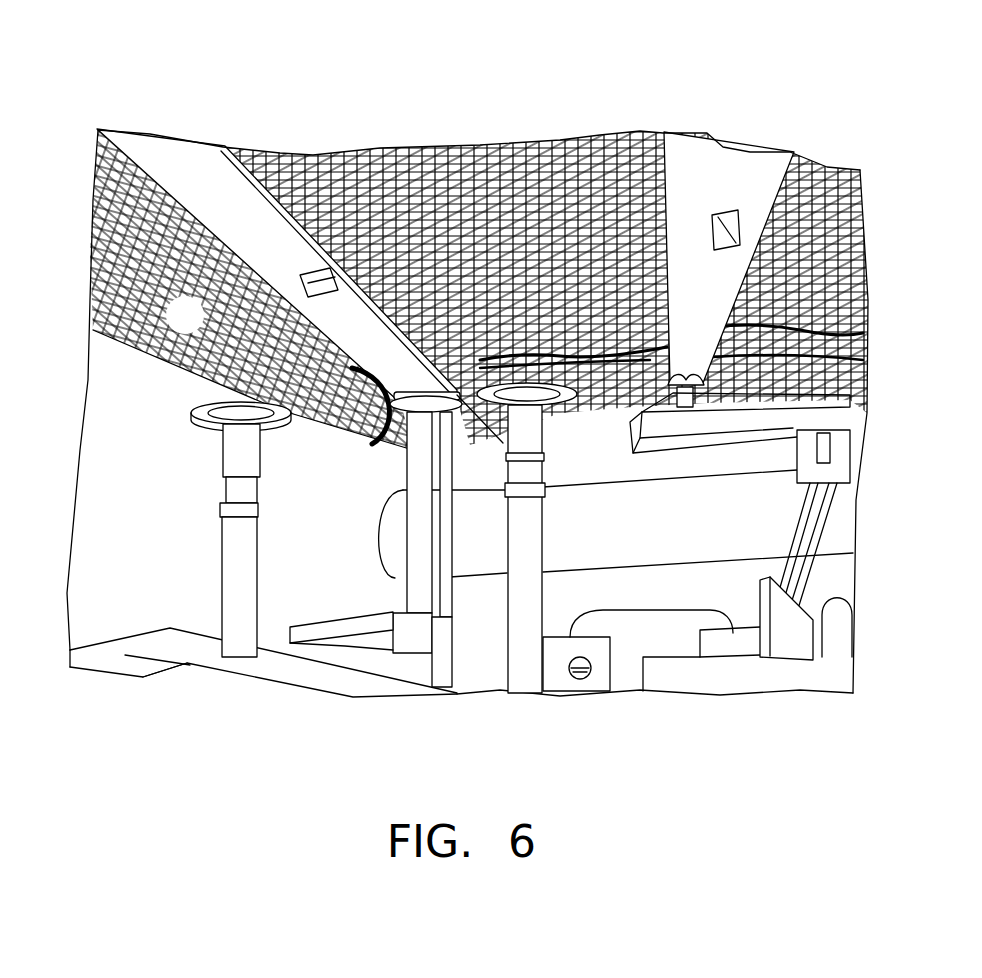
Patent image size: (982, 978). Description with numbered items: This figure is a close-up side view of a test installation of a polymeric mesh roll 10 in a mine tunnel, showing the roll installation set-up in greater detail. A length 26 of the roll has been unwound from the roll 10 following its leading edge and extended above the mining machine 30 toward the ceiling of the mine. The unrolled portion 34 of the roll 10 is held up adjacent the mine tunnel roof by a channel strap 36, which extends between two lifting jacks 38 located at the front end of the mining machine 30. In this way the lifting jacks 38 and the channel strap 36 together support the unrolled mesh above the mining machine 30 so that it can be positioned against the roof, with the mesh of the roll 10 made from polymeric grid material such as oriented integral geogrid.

The mesh roll 10 is at (78, 309).
The length of the roll 26 is at (566, 142).
The mining machine 30 is at (558, 675).
The unrolled portion 34 is at (199, 329).
The channel strap 36 is at (262, 152).
The lifting jacks 38 is at (527, 391).